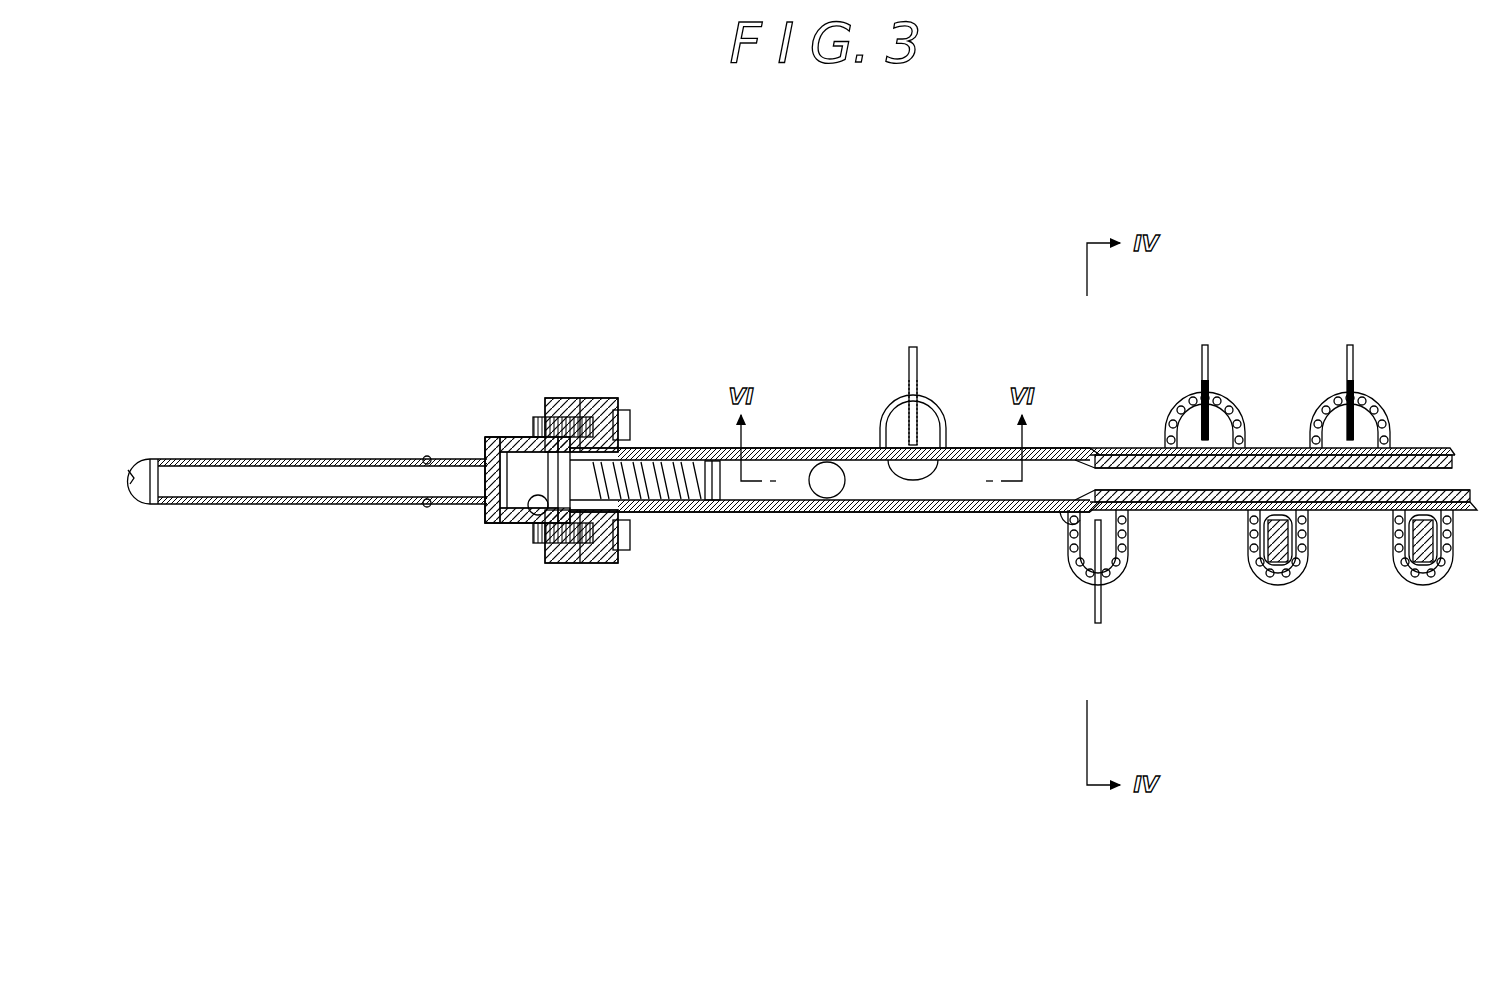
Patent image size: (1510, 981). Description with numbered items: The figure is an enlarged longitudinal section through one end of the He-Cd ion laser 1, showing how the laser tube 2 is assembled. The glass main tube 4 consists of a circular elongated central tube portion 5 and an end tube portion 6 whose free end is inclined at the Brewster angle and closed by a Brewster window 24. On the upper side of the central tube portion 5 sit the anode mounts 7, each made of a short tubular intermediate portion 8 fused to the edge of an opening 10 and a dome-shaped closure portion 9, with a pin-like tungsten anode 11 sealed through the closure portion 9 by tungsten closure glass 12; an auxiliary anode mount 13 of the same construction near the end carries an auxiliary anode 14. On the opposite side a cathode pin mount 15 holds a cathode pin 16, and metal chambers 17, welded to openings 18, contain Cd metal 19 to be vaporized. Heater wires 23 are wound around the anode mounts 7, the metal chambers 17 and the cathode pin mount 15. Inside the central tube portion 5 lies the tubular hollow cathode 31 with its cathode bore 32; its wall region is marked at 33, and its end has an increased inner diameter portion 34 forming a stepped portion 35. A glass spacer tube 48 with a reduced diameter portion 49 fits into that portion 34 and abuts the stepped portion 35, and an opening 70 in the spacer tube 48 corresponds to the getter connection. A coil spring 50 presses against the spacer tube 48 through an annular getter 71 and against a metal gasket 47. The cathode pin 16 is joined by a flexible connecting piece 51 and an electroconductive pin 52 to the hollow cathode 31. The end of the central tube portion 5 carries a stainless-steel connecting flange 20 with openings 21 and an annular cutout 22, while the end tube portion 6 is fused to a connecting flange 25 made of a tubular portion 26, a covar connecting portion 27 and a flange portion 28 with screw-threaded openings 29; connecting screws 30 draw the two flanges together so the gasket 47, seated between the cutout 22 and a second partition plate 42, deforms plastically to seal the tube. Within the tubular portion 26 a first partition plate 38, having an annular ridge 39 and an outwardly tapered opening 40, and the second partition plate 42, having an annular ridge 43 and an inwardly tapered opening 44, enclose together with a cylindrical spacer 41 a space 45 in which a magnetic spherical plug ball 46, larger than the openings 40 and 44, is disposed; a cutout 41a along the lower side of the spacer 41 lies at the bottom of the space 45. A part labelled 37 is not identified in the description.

The He-Cd ion laser 1 is at (748, 240).
The laser tube 2 is at (815, 448).
The glass main tube 4 is at (493, 218).
The central tube portion 5 is at (682, 448).
The end tube portion 6 is at (320, 459).
The anode mount 7 is at (1281, 308).
The intermediate portion 8 is at (950, 455).
The closure portion 9 is at (940, 440).
The opening 10 is at (1246, 450).
The anode 11 is at (1203, 400).
The tungsten closure glass 12 is at (906, 430).
The auxiliary anode mount 13 is at (983, 298).
The auxiliary anode 14 is at (916, 380).
The cathode pin mount 15 is at (1176, 671).
The cathode pin 16 is at (1096, 620).
The metal chamber 17 is at (1288, 580).
The opening 18 is at (1310, 514).
The Cd metal 19 is at (1278, 586).
The connecting flange 20 is at (612, 560).
The openings 21 is at (624, 415).
The annular cutout 22 is at (598, 400).
The heater wire 23 is at (1242, 432).
The Brewster window 24 is at (126, 466).
The connecting flange 25 is at (568, 562).
The tubular portion 26 is at (500, 523).
The connecting portion 27 is at (486, 523).
The flange portion 28 is at (560, 563).
The screw-threaded opening 29 is at (552, 428).
The connecting screw 30 is at (616, 424).
The hollow cathode 31 is at (1148, 455).
The cathode bore 32 is at (1195, 510).
The rail wall 33 is at (1214, 495).
The increased inner diameter portion 34 is at (1067, 455).
The stepped portion 35 is at (1103, 462).
The body top wall 37 is at (506, 446).
The first partition plate 38 is at (500, 445).
The annular ridge 39 is at (520, 444).
The outwardly tapered opening 40 is at (492, 466).
The spacer 41 is at (528, 442).
The cutout 41a is at (518, 523).
The second partition plate 42 is at (562, 418).
The annular ridge 43 is at (545, 435).
The inwardly tapered opening 44 is at (530, 523).
The space 45 is at (528, 481).
The plug ball 46 is at (447, 460).
The metal gasket 47 is at (568, 420).
The spacer tube 48 is at (790, 460).
The reduced diameter portion 49 is at (1052, 512).
The coil spring 50 is at (703, 506).
The flexible connecting piece 51 is at (1075, 525).
The electroconductive pin 52 is at (1066, 512).
The opening 70 is at (830, 499).
The getter 71 is at (705, 455).